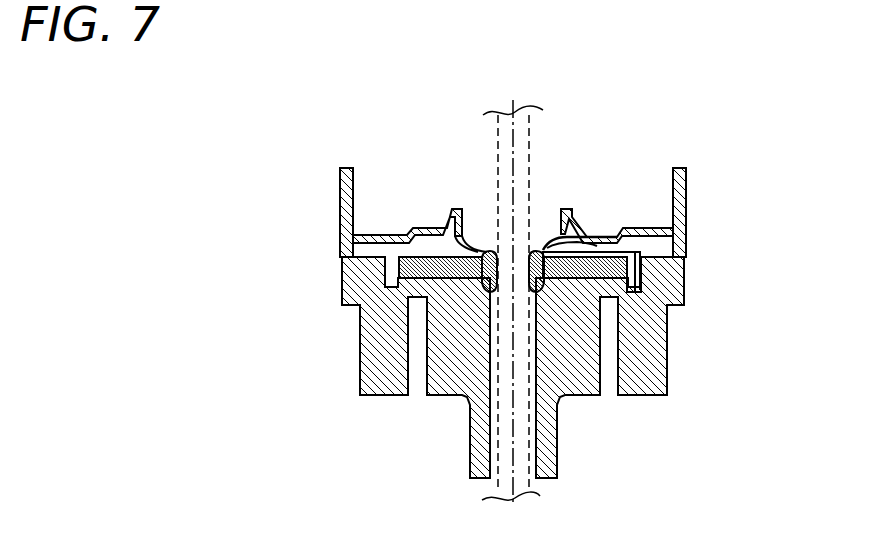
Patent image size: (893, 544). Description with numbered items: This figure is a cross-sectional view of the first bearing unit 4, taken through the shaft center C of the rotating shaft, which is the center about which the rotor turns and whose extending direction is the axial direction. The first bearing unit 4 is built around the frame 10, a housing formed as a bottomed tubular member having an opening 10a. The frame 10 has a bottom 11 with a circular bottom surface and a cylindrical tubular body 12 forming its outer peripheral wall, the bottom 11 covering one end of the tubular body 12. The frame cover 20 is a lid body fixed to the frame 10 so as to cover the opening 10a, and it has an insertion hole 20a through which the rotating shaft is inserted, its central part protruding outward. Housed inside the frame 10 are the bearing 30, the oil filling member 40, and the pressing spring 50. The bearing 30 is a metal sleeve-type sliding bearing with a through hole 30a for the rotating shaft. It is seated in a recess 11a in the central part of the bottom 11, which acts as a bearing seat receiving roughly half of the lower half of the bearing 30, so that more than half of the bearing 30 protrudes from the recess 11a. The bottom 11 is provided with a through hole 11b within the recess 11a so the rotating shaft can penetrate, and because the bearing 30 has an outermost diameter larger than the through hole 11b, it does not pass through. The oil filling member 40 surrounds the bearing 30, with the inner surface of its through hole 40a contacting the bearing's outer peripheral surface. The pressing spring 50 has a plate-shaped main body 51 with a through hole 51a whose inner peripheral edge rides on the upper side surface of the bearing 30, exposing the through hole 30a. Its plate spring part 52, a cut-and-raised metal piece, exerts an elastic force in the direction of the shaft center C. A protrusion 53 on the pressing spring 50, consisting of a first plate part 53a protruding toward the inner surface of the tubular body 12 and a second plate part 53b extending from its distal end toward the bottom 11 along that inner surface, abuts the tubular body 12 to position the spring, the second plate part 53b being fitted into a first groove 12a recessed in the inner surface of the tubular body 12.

The first bearing unit 4 is at (246, 130).
The shaft center C is at (515, 105).
The frame 10 is at (257, 275).
The opening 10a is at (383, 249).
The bottom 11 is at (388, 280).
The recess 11a is at (562, 248).
The through hole 11b is at (534, 333).
The tubular body 12 is at (345, 255).
The first groove 12a is at (667, 307).
The frame cover 20 is at (440, 221).
The insertion hole 20a is at (569, 205).
The bearing 30 is at (490, 287).
The through hole 30a is at (513, 247).
The oil filling member 40 is at (471, 267).
The through hole 40a is at (437, 258).
The pressing spring 50 is at (818, 100).
The main body 51 is at (647, 275).
The through hole 51a is at (545, 240).
The plate spring part 52 is at (620, 236).
The protrusion 53 is at (763, 220).
The first plate part 53a is at (650, 250).
The second plate part 53b is at (645, 262).